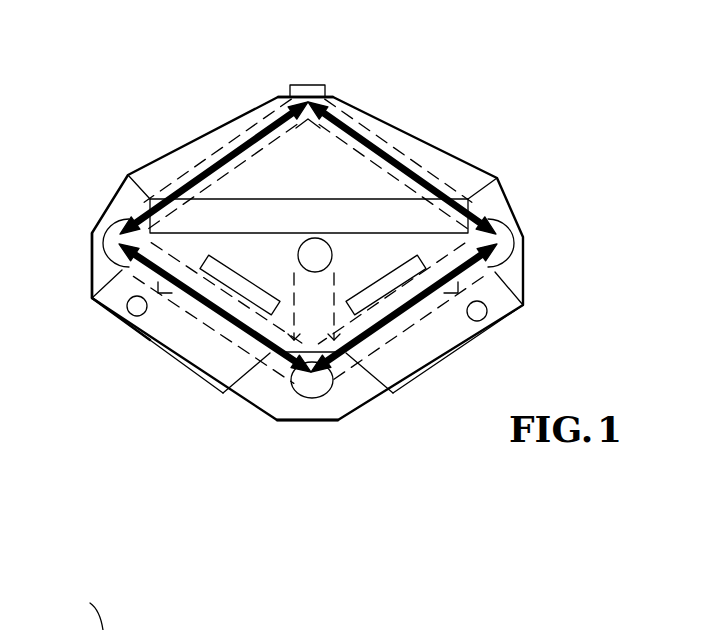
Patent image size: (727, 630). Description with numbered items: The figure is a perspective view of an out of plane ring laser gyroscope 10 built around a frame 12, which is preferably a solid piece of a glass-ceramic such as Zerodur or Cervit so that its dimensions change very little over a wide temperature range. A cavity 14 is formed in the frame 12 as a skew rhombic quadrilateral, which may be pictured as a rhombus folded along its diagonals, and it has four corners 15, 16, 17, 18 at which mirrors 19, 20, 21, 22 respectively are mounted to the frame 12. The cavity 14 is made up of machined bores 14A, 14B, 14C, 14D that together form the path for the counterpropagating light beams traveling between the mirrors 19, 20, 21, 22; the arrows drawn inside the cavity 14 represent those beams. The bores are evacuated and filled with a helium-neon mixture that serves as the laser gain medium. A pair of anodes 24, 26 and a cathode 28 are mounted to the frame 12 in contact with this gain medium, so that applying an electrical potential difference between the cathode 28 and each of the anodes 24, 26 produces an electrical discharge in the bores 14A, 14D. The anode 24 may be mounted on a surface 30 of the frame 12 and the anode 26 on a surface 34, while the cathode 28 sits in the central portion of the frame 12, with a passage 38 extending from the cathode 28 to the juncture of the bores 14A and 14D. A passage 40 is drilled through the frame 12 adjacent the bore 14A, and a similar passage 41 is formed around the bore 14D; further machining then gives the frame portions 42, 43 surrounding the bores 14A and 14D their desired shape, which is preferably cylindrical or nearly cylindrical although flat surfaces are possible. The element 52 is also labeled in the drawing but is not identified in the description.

The out of plane ring laser gyroscope 10 is at (298, 530).
The frame 12 is at (166, 449).
The cavity 14 is at (153, 118).
The bore 14A is at (416, 333).
The bore 14B is at (413, 157).
The bore 14C is at (257, 117).
The bore 14D is at (207, 340).
The corner 15 is at (326, 451).
The corner 16 is at (561, 234).
The corner 17 is at (367, 66).
The corner 18 is at (88, 181).
The mirror 19 is at (302, 400).
The mirror 20 is at (510, 263).
The mirror 21 is at (313, 87).
The mirror 22 is at (103, 263).
The anode 24 is at (521, 306).
The anode 26 is at (112, 298).
The cathode 28 is at (282, 243).
The surface 30 is at (430, 368).
The surface 34 is at (115, 327).
The passage 38 is at (294, 297).
The passage 40 is at (400, 268).
The passage 41 is at (247, 278).
The frame portion 42 is at (425, 316).
The frame portion 43 is at (190, 317).
The lead 52 is at (103, 629).